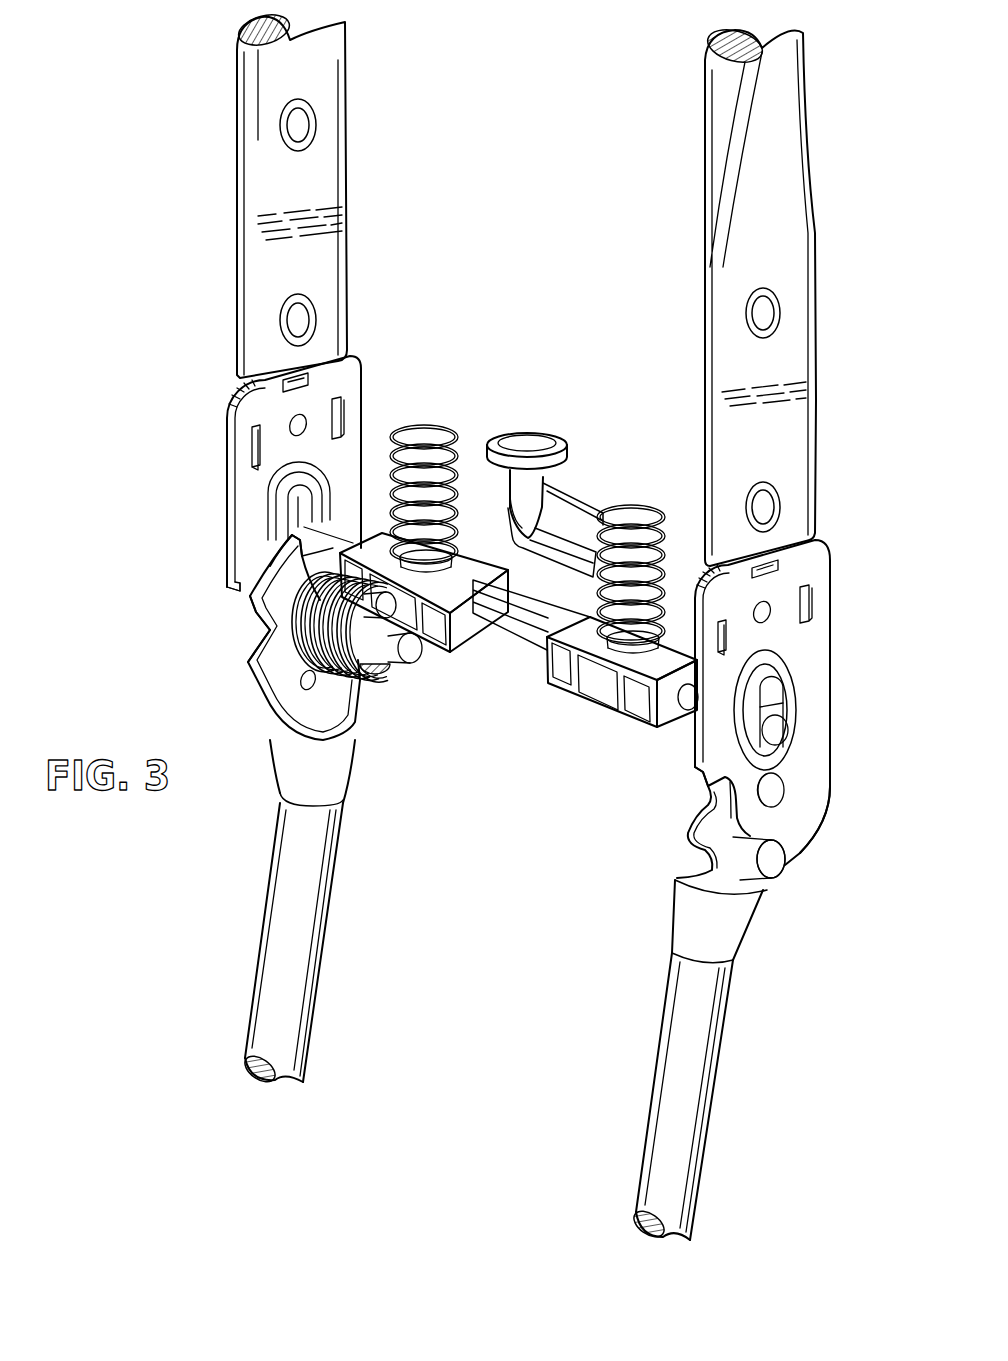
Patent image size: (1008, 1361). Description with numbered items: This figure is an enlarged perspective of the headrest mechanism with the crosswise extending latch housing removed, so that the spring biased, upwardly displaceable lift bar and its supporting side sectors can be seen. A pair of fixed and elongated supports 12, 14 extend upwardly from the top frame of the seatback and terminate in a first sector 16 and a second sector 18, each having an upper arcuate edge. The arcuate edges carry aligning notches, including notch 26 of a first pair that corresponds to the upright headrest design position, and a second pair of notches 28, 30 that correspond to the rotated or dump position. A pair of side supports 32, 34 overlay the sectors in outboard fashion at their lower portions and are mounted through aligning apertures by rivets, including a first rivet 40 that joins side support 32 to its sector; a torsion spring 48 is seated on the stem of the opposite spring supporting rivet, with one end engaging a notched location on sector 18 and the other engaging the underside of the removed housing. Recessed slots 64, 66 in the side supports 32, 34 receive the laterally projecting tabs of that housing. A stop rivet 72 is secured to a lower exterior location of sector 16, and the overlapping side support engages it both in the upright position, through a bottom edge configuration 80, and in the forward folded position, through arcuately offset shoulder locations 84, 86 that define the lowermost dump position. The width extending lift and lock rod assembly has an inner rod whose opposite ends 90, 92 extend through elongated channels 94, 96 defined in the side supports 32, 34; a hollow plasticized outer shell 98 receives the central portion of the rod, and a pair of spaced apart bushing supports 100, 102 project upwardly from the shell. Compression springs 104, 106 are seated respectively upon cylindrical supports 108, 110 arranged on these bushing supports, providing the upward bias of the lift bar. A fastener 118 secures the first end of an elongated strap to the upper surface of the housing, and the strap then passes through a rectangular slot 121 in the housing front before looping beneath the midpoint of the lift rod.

The fixed elongated support 12 is at (660, 1117).
The fixed elongated support 14 is at (263, 997).
The first upper arcuate edge defining sector 16 is at (725, 890).
The second upper arcuate edge defining sector 18 is at (275, 675).
The aligning notch 26 is at (303, 547).
The aligning notch 28 is at (698, 820).
The aligning notch 30 is at (258, 650).
The side support 32 is at (830, 677).
The side support 34 is at (224, 517).
The first rivet 40 is at (778, 793).
The torsion spring 48 is at (375, 677).
The recessed slot 64 is at (740, 627).
The recessed slot 66 is at (328, 412).
The stop rivet 72 is at (773, 863).
The bottom edge configuration 80 is at (800, 850).
The shoulder location 84 is at (698, 788).
The shoulder location 86 is at (235, 597).
The rod end 90 is at (782, 728).
The rod end 92 is at (297, 492).
The elongated channel 94 is at (783, 688).
The elongated channel 96 is at (278, 510).
The outer shell 98 is at (512, 635).
The bushing support 100 is at (462, 633).
The bushing support 102 is at (590, 693).
The compression spring 104 is at (423, 425).
The compression spring 106 is at (635, 508).
The cylindrical support 108 is at (447, 550).
The cylindrical support 110 is at (613, 630).
The fastener 118 is at (527, 440).
The rectangular slot 121 is at (567, 537).